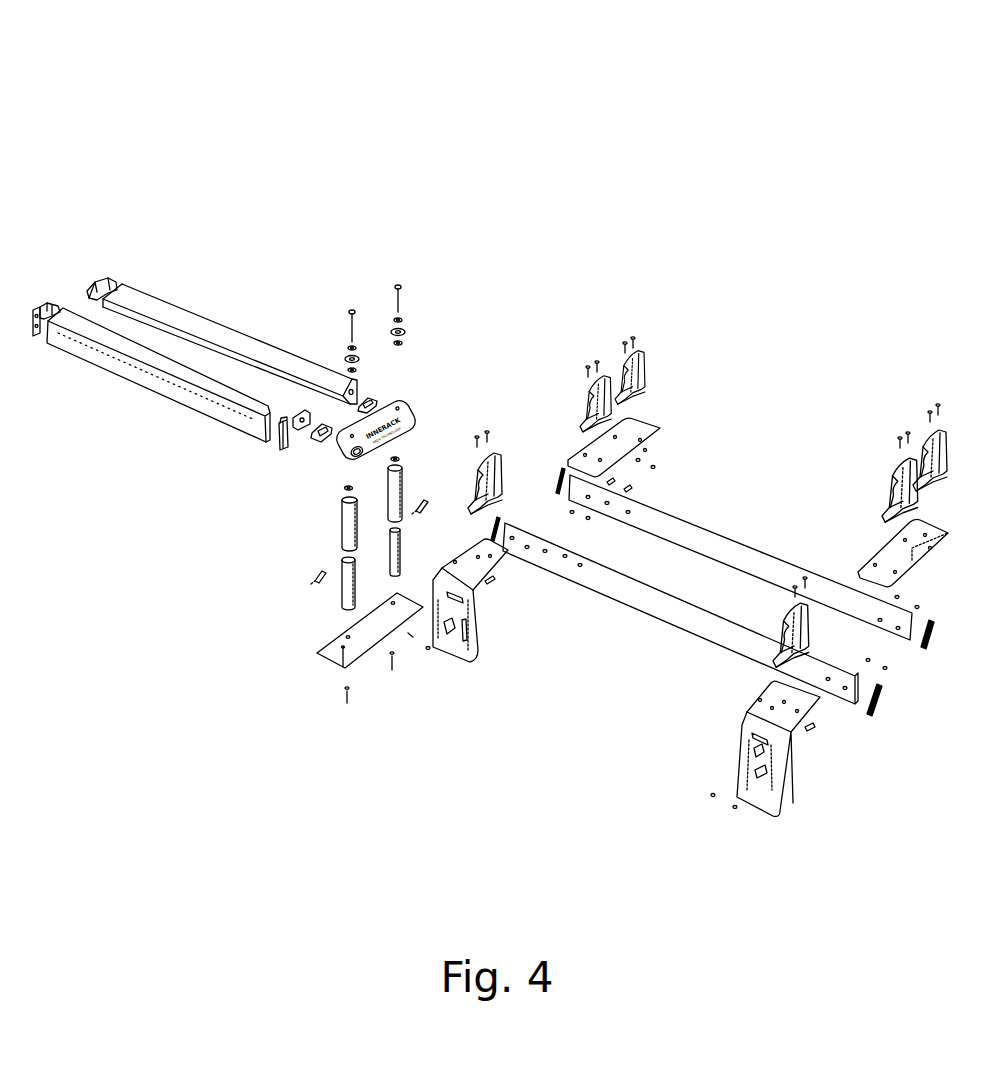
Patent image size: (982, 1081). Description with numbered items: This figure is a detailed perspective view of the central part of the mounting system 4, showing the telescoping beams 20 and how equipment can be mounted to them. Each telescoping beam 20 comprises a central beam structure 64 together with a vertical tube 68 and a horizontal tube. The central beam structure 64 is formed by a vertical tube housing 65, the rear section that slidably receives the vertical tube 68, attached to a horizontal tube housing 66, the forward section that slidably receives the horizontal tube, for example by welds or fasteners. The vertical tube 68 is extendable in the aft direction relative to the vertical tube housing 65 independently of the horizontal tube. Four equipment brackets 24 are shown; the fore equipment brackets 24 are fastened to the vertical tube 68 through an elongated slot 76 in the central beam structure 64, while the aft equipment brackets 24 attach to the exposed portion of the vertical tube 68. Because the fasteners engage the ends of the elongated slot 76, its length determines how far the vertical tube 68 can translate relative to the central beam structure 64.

The mounting system 4 is at (230, 95).
The telescoping beam 20 is at (226, 585).
The equipment bracket 24 is at (482, 565).
The central beam structure 64 is at (135, 353).
The vertical tube housing 65 is at (53, 337).
The horizontal tube housing 66 is at (147, 348).
The vertical tube 68 is at (622, 585).
The elongated slot 76 is at (193, 400).